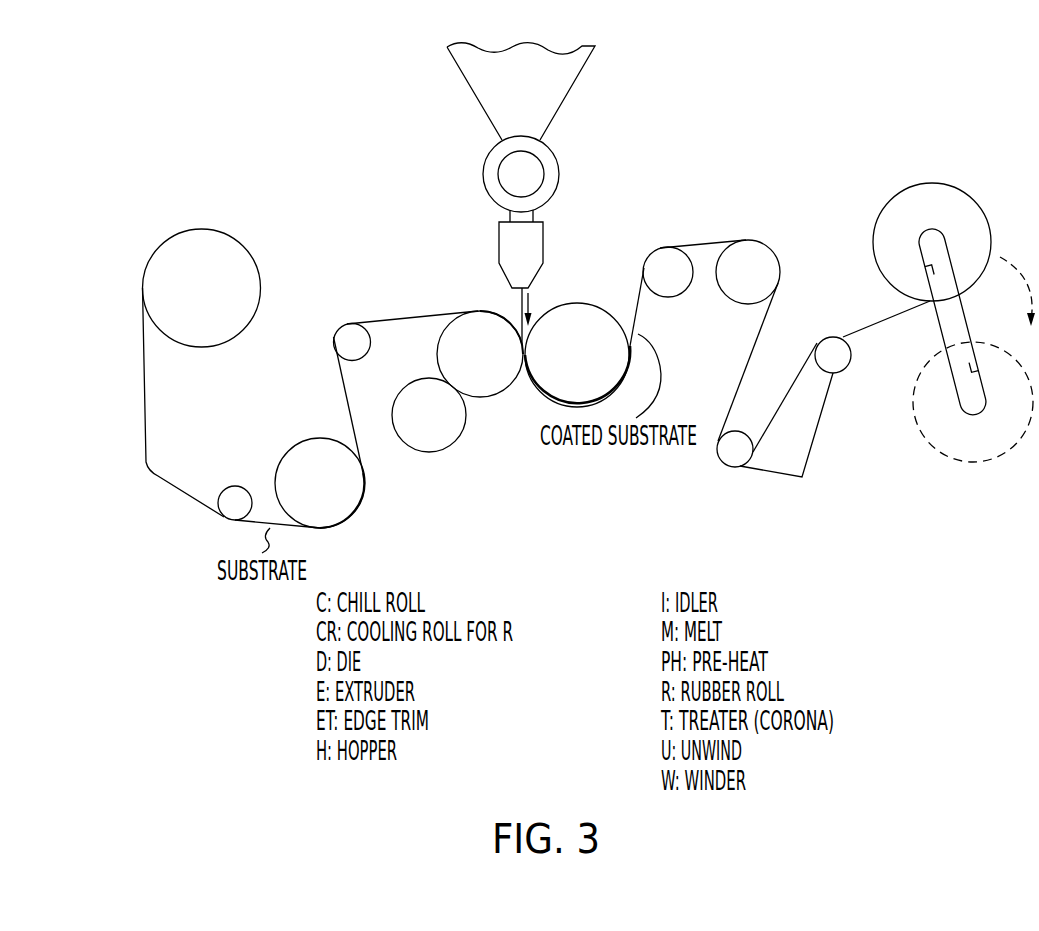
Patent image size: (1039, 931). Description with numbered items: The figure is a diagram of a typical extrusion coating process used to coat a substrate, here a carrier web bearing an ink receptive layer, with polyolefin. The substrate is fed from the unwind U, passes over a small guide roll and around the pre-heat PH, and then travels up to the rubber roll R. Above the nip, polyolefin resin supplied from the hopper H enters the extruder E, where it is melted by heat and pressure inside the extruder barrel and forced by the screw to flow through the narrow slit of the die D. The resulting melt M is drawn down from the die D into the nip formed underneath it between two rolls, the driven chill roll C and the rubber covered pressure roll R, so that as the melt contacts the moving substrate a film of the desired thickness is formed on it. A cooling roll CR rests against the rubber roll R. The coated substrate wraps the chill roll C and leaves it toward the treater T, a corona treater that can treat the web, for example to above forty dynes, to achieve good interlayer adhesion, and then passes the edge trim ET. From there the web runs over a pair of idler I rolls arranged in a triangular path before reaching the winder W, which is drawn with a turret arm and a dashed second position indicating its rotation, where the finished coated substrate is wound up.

The chill roll C is at (577, 355).
The cooling roll for rubber roll CR is at (429, 415).
The die D is at (521, 249).
The extruder E is at (480, 163).
The edge trim ET is at (748, 272).
The hopper H is at (521, 91).
The idler I is at (815, 440).
The melt M is at (516, 308).
The pre-heat PH is at (320, 483).
The rubber roll R is at (480, 354).
The treater (corona) T is at (668, 272).
The unwind U is at (202, 288).
The winder W is at (954, 322).